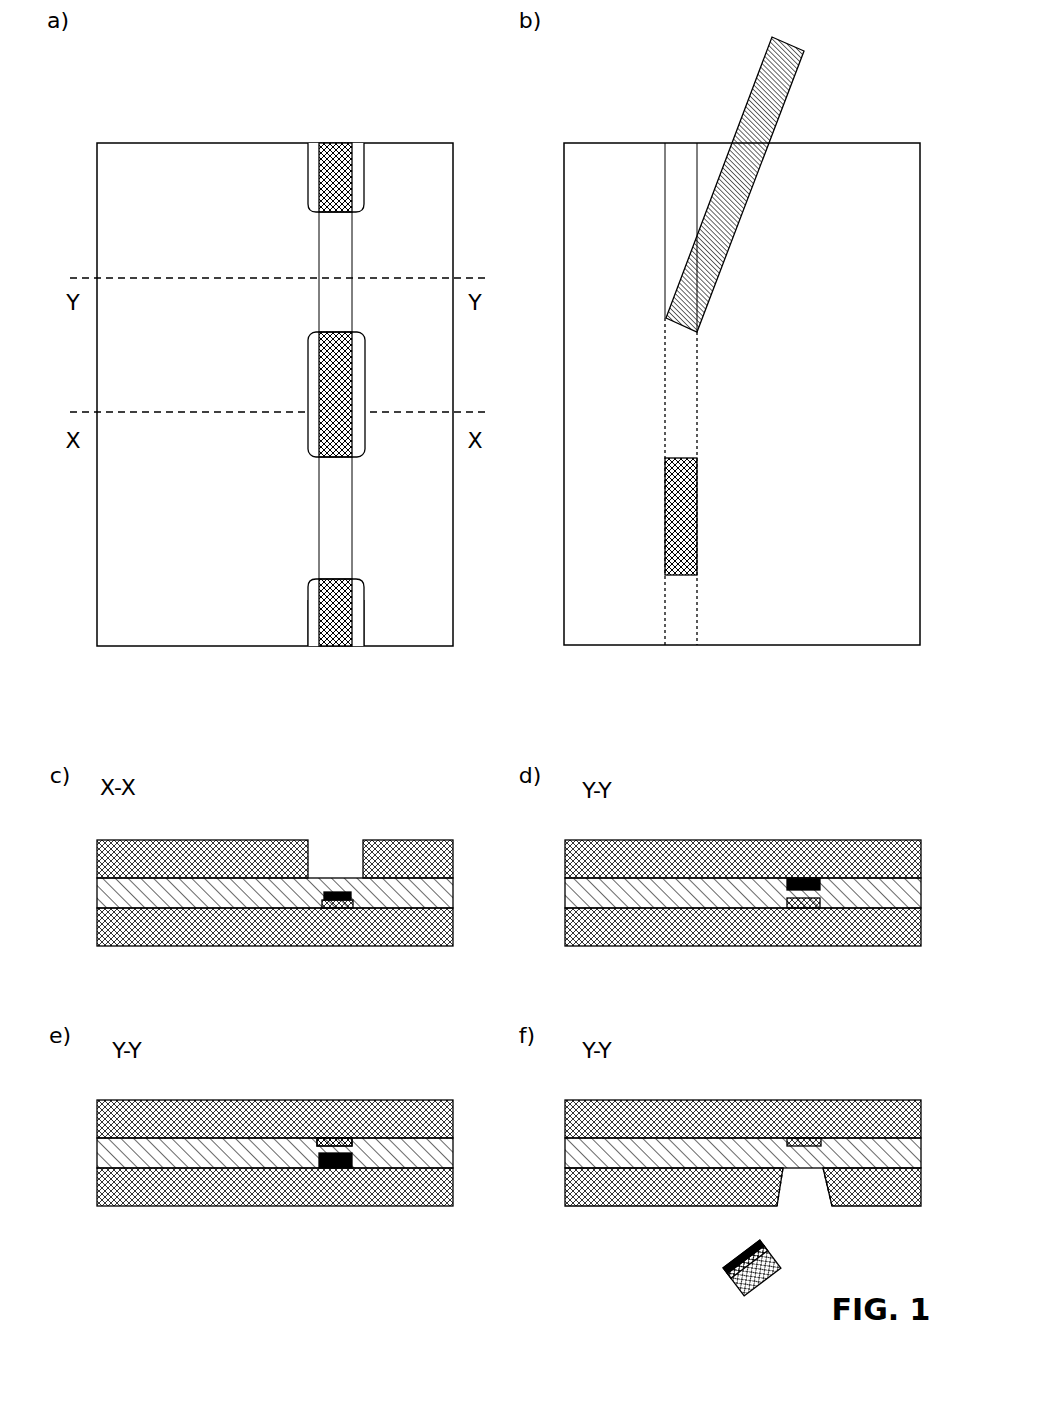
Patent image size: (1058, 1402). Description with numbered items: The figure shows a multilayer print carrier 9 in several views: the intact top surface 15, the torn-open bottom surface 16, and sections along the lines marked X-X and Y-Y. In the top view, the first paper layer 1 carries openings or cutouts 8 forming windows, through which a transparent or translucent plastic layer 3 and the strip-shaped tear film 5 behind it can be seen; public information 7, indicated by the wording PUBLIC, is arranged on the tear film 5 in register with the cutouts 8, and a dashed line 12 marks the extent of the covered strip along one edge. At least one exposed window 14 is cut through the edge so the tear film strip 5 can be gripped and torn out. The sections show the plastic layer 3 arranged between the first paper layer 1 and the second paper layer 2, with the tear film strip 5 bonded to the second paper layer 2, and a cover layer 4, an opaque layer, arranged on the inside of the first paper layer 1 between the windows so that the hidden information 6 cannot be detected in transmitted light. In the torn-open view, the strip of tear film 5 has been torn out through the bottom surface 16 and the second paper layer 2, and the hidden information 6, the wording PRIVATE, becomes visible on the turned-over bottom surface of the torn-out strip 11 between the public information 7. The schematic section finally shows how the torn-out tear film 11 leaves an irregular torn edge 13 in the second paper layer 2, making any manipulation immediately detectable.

The first paper layer 1 is at (152, 635).
The second paper layer 2 is at (770, 634).
The plastic layer 3 is at (375, 146).
The cover layer 4 is at (690, 525).
The tear film 5 is at (355, 186).
The hidden information 6 is at (740, 143).
The public information 7 is at (352, 392).
The cutouts 8 is at (308, 160).
The print carrier 9 is at (221, 663).
The torn-out tear film 11 is at (775, 127).
The dashed line 12 is at (353, 248).
The torn edge 13 is at (698, 405).
The exposed window 14 is at (350, 648).
The top surface 15 is at (199, 536).
The bottom surface 16 is at (820, 576).